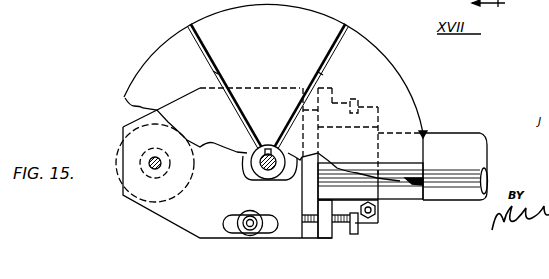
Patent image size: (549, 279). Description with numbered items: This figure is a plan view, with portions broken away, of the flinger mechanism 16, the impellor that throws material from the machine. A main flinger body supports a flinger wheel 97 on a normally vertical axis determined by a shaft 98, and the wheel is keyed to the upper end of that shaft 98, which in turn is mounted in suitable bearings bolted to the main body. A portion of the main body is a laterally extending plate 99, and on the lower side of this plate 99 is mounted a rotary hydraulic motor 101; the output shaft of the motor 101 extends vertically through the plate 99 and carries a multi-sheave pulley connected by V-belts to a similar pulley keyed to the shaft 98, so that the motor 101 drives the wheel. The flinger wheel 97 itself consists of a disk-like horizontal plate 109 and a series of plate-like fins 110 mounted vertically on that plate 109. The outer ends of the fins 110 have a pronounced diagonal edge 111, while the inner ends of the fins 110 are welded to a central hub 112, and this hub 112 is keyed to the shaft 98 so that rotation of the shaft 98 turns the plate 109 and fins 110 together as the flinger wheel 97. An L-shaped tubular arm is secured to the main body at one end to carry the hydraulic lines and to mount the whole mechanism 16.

The flinger mechanism 16 is at (402, 78).
The flinger wheel 97 is at (152, 53).
The shaft 98 is at (265, 179).
The laterally extending plate 99 is at (186, 217).
The rotary hydraulic motor 101 is at (155, 197).
The disk-like horizontal plate 109 is at (400, 108).
The plate-like fins 110 is at (218, 60).
The diagonal edge 111 is at (192, 38).
The central hub 112 is at (266, 143).